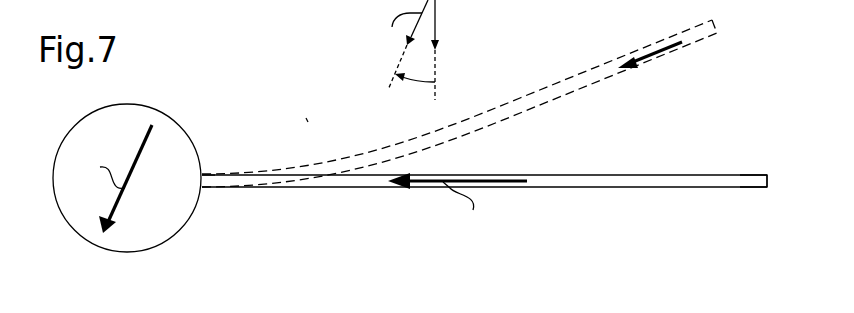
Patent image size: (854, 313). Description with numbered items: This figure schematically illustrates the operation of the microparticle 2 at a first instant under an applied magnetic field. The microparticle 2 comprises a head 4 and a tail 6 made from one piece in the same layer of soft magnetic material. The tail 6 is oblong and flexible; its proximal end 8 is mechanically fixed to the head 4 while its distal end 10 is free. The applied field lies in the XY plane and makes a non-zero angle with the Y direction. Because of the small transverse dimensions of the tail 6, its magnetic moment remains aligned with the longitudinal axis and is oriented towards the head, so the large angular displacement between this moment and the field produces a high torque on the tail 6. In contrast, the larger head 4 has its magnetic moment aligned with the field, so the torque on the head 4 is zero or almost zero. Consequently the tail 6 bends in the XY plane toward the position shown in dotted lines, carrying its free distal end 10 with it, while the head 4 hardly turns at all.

The microparticle 2 is at (305, 116).
The head 4 is at (196, 229).
The tail 6 is at (528, 92).
The proximal end 8 is at (207, 180).
The free distal end 10 is at (697, 28).